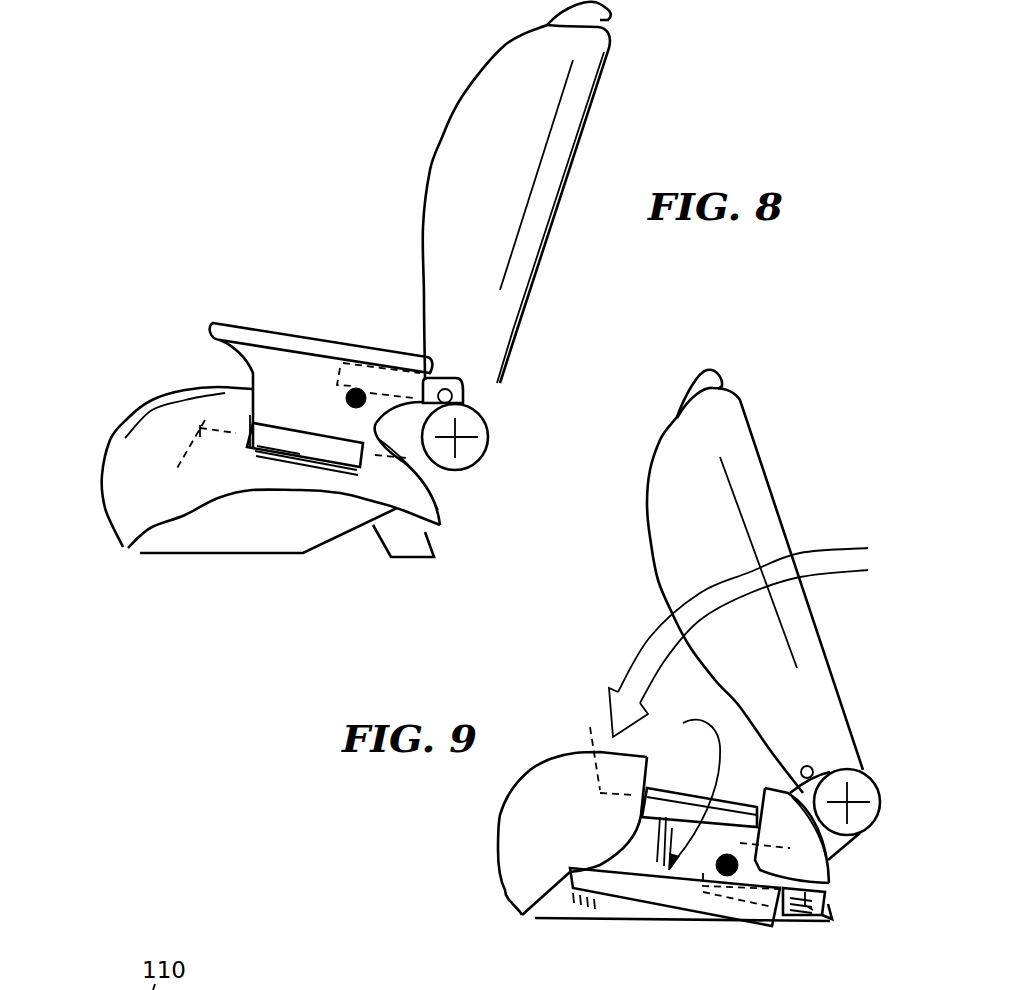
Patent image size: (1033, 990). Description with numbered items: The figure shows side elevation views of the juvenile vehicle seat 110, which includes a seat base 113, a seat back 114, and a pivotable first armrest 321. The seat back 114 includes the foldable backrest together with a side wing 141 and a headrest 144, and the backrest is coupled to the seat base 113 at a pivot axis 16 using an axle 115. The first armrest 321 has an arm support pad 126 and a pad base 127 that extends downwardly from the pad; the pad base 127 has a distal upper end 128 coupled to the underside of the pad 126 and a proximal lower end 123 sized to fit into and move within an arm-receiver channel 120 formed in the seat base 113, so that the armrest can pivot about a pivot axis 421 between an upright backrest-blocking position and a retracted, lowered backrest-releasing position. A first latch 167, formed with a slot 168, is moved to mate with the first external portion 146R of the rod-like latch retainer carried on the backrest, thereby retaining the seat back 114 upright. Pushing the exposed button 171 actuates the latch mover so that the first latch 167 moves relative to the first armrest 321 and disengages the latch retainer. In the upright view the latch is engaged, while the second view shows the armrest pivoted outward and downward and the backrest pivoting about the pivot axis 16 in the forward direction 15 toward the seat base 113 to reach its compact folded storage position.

In FIG. 8, the juvenile vehicle seat 110 is at (247, 212).
In FIG. 9, the juvenile vehicle seat 110 is at (818, 497).
In FIG. 8, the seat base 113 is at (103, 530).
In FIG. 9, the seat base 113 is at (506, 899).
In FIG. 8, the seat back 114 is at (582, 154).
In FIG. 9, the seat back 114 is at (769, 478).
In FIG. 8, the axle 115 is at (475, 403).
In FIG. 9, the axle 115 is at (850, 776).
In FIG. 8, the arm-receiver channel 120 is at (265, 420).
In FIG. 9, the arm-receiver channel 120 is at (657, 765).
In FIG. 8, the lower end 123 is at (290, 453).
In FIG. 9, the lower end 123 is at (670, 806).
In FIG. 8, the arm support pad 126 is at (272, 338).
In FIG. 9, the arm support pad 126 is at (662, 893).
In FIG. 8, the pad base 127 is at (352, 427).
In FIG. 9, the pad base 127 is at (733, 843).
In FIG. 8, the distal upper end 128 is at (334, 335).
In FIG. 8, the side wing 141 is at (467, 187).
In FIG. 9, the side wing 141 is at (658, 537).
In FIG. 8, the headrest 144 is at (602, 20).
In FIG. 9, the headrest 144 is at (700, 377).
In FIG. 8, the first external portion of latch retainer 146R is at (448, 390).
In FIG. 9, the first external portion of latch retainer 146R is at (807, 765).
In FIG. 9, the forward direction 15 is at (647, 643).
In FIG. 8, the pivot axis 16 is at (480, 422).
In FIG. 9, the pivot axis 16 is at (853, 798).
In FIG. 8, the first latch 167 is at (433, 380).
In FIG. 9, the first latch 167 is at (803, 920).
In FIG. 8, the slot 168 is at (440, 480).
In FIG. 9, the slot 168 is at (830, 875).
In FIG. 8, the button 171 is at (359, 390).
In FIG. 9, the button 171 is at (727, 853).
In FIG. 8, the first armrest 321 is at (224, 320).
In FIG. 8, the pivot axis 421 is at (188, 453).
In FIG. 9, the pivot axis 421 is at (593, 752).